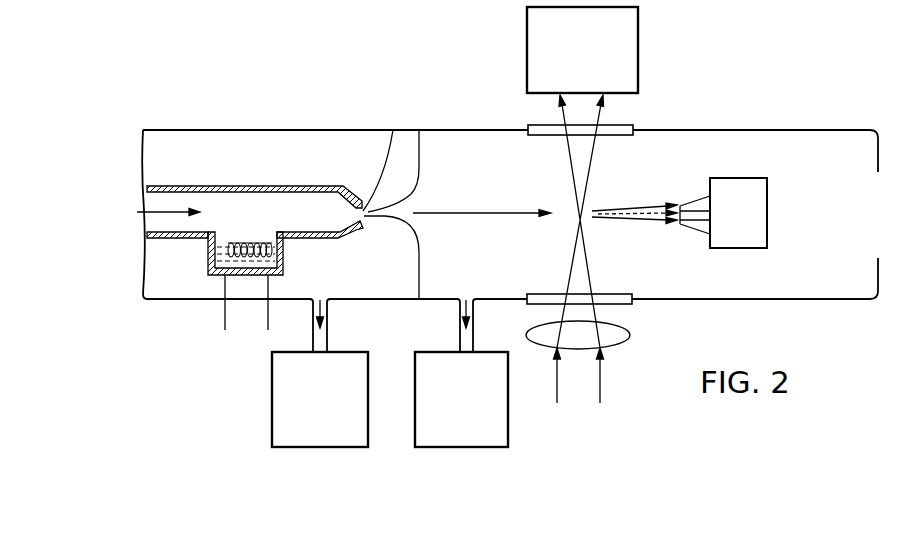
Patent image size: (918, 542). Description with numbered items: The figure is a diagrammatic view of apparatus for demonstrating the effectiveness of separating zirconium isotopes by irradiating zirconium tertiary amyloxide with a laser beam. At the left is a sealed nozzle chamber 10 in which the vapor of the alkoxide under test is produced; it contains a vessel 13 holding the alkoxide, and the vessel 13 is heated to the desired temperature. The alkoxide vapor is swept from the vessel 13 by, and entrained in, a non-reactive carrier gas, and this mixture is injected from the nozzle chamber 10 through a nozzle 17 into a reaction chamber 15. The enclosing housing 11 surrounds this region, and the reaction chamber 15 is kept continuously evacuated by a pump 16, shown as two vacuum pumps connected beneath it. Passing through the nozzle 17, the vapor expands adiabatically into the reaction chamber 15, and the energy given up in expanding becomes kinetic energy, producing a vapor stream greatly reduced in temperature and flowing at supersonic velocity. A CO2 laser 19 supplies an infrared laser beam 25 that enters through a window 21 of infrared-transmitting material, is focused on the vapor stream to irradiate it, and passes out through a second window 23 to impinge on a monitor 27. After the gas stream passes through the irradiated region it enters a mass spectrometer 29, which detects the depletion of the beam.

The chamber 10 is at (315, 212).
The vacuum chamber 11 is at (226, 140).
The vessel 13 is at (215, 263).
The reaction chamber 15 is at (458, 133).
The pump 16 is at (508, 441).
The nozzle 17 is at (395, 129).
The CO2 laser 19 is at (628, 337).
The window 21 is at (636, 304).
The window 23 is at (636, 123).
The laser beam 25 is at (583, 162).
The monitor 27 is at (640, 22).
The mass spectrometer 29 is at (745, 243).